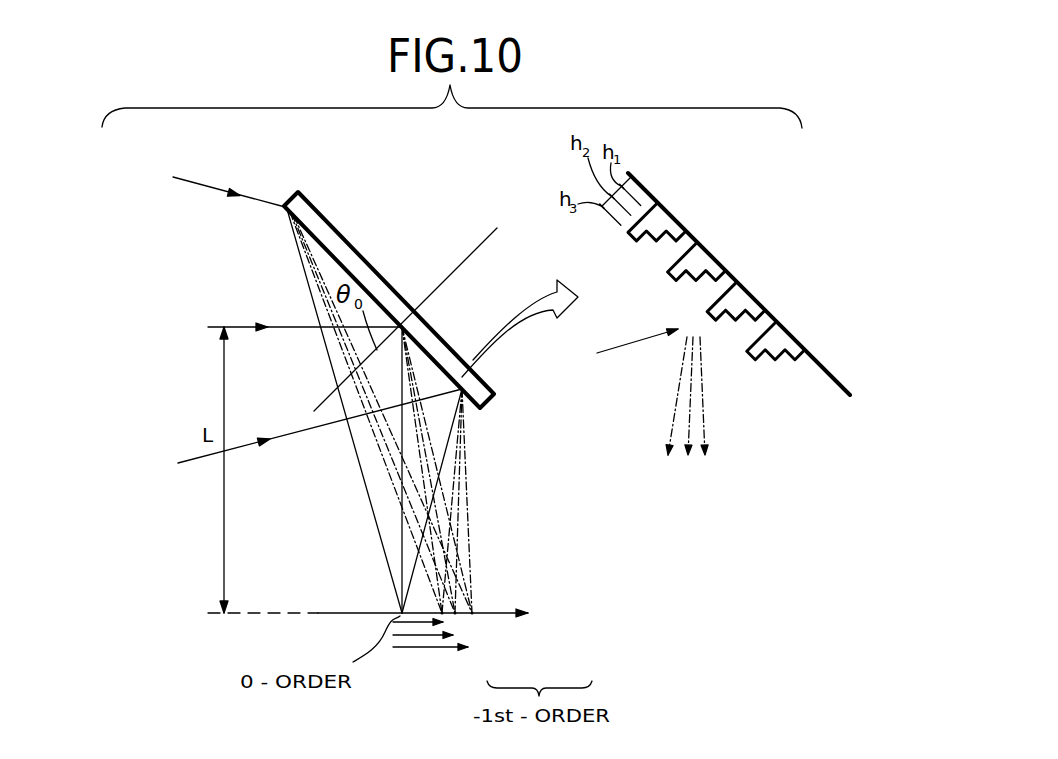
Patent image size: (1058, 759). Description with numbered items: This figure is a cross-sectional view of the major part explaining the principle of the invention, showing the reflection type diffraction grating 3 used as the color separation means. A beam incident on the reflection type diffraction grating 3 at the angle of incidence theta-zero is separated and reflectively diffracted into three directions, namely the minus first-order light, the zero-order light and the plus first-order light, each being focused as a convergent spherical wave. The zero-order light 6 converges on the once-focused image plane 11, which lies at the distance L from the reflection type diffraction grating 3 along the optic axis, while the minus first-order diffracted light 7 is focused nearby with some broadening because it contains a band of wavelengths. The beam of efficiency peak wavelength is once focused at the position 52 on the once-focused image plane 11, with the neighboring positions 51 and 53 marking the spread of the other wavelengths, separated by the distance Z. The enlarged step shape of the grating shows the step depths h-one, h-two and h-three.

The reflection type diffraction grating 3 is at (356, 248).
The 0-order diffracted light 6 is at (371, 503).
The -1st order diffracted light 7 is at (470, 497).
The once-focused image plane 11 is at (337, 615).
The -1st order focal point 51 is at (442, 613).
The position 52 is at (455, 613).
The -1st order focal point 53 is at (472, 613).